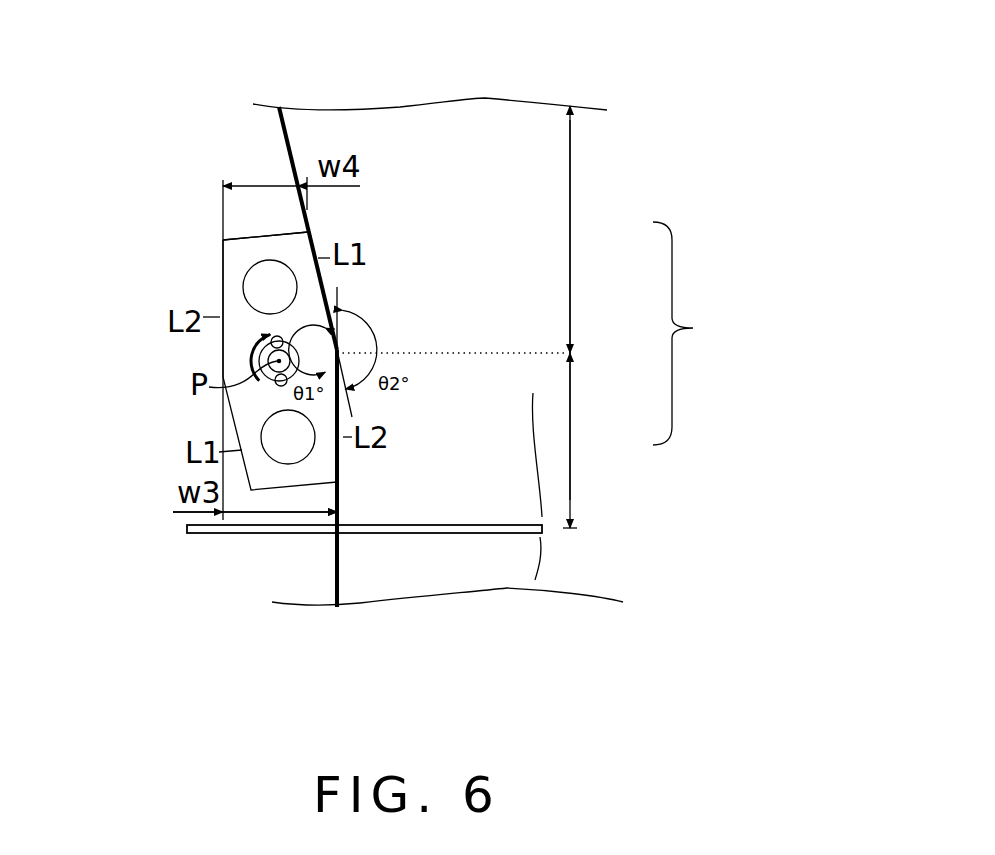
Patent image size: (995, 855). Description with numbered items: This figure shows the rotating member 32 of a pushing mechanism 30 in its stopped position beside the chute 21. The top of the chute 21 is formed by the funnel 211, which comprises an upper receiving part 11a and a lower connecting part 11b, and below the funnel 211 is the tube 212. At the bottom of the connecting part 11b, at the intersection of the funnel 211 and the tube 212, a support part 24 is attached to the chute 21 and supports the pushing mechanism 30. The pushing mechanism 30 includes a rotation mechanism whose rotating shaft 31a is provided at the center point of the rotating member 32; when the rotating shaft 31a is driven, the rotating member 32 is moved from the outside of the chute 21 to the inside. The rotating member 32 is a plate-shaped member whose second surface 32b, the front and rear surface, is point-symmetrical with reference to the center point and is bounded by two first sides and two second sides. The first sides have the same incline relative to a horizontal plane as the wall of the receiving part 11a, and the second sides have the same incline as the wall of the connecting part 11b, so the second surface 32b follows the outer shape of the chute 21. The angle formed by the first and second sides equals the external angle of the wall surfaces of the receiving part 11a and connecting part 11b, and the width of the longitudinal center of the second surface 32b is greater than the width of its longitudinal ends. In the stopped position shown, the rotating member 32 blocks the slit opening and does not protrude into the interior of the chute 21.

The chute 21 is at (583, 87).
The funnel 211 is at (519, 357).
The receiving part 11a is at (461, 228).
The connecting part 11b is at (490, 478).
The tube 212 is at (515, 567).
The support part 24 is at (207, 533).
The pushing mechanism 30 is at (201, 303).
The rotating member 32 is at (201, 361).
The second surface 32b is at (223, 260).
The rotating shaft 31a is at (243, 347).